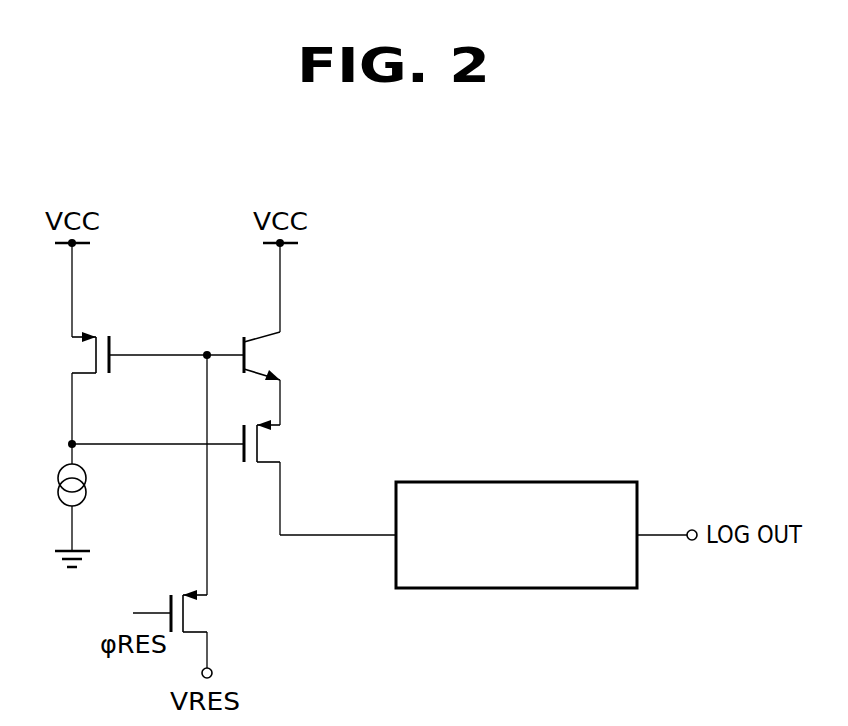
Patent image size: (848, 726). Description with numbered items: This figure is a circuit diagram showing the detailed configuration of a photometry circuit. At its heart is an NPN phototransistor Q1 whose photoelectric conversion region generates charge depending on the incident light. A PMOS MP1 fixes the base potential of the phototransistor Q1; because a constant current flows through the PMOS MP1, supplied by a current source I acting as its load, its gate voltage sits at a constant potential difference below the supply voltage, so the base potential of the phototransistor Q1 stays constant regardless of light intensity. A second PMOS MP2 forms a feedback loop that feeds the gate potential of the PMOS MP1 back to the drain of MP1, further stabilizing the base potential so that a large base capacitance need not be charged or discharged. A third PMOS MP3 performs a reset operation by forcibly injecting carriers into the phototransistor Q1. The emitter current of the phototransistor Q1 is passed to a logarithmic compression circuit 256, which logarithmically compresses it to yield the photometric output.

The logarithmic compression circuit 256 is at (514, 482).
The PMOS MP1 is at (57, 352).
The PMOS MP2 is at (295, 441).
The PMOS MP3 is at (208, 611).
The NPN phototransistor Q1 is at (284, 356).
The current source I is at (59, 485).